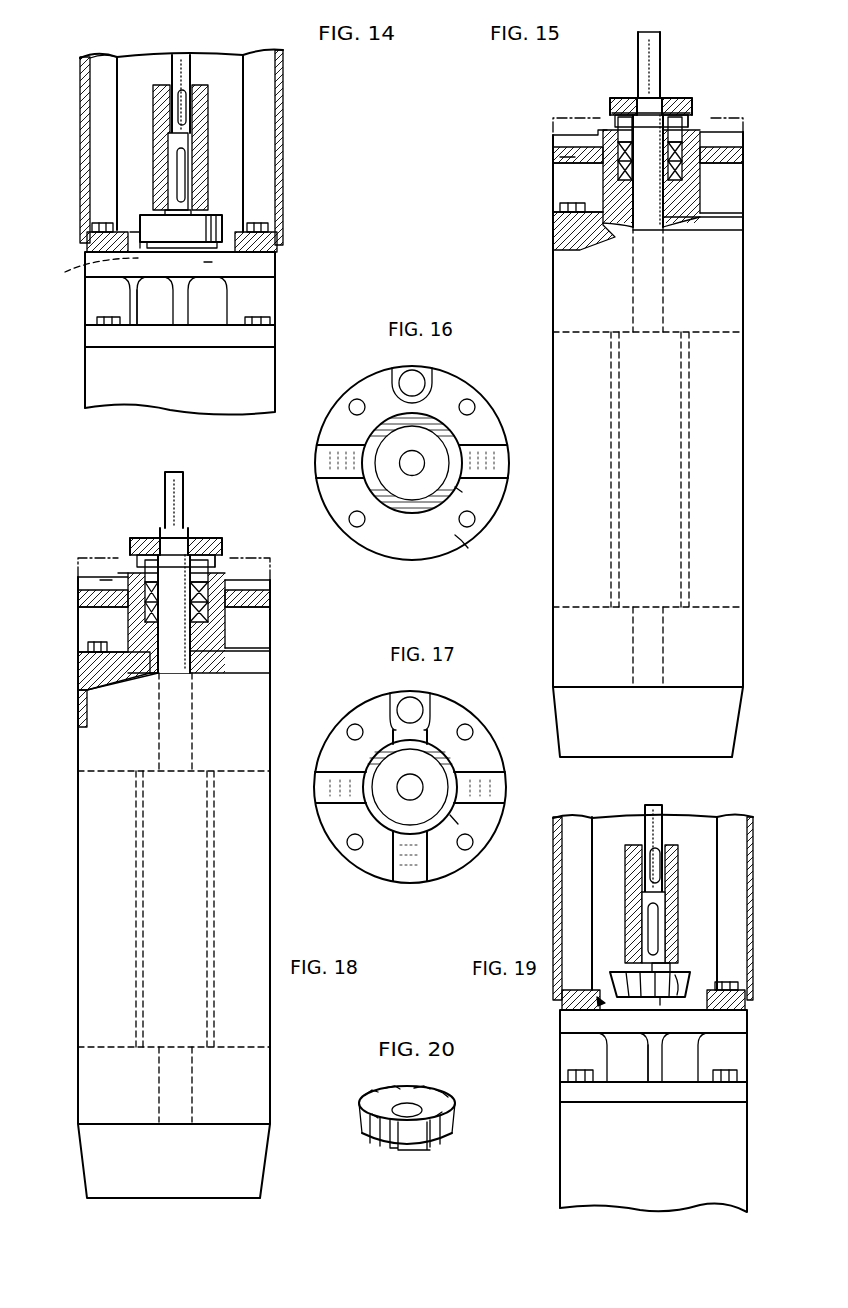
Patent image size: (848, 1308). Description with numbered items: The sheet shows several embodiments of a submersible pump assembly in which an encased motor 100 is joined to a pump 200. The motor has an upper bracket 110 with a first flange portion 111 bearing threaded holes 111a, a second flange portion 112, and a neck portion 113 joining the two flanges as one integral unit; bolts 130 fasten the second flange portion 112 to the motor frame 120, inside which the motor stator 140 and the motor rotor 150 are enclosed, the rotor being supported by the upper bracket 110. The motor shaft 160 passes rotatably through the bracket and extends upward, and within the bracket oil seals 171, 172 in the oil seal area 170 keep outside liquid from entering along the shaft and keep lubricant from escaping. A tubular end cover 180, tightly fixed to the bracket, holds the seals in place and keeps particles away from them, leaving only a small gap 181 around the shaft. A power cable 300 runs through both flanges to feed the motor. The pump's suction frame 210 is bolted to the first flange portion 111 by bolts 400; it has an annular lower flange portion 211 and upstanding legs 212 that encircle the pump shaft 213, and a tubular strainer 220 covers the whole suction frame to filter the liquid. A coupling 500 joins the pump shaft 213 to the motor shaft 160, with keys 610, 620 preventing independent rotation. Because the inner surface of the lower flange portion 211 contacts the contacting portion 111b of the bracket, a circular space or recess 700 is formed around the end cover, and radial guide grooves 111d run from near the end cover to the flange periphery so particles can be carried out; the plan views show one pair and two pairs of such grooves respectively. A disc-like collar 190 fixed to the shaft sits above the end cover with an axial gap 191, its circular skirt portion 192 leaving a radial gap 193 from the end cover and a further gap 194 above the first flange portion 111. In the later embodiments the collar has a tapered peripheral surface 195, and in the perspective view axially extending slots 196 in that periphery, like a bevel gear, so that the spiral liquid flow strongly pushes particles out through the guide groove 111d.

In FIG. 14, the encased motor 100 is at (92, 410).
In FIG. 15, the encased motor 100 is at (748, 455).
In FIG. 18, the encased motor 100 is at (92, 1056).
In FIG. 19, the encased motor 100 is at (752, 1181).
In FIG. 14, the upper bracket 110 is at (270, 260).
In FIG. 16, the upper bracket 110 is at (437, 547).
In FIG. 18, the upper bracket 110 is at (253, 577).
In FIG. 14, the first flange portion 111 is at (265, 283).
In FIG. 15, the first flange portion 111 is at (565, 177).
In FIG. 16, the first flange portion 111 is at (463, 543).
In FIG. 18, the first flange portion 111 is at (117, 578).
In FIG. 19, the first flange portion 111 is at (735, 1023).
In FIG. 16, the threaded holes 111a is at (468, 405).
In FIG. 17, the threaded holes 111a is at (463, 727).
In FIG. 14, the contacting portion 111b is at (208, 253).
In FIG. 15, the contacting portion 111b is at (560, 132).
In FIG. 16, the contacting portion 111b is at (460, 490).
In FIG. 17, the contacting portion 111b is at (455, 822).
In FIG. 14, the radial guide groove 111d is at (91, 276).
In FIG. 15, the radial guide groove 111d is at (565, 157).
In FIG. 16, the radial guide groove 111d is at (330, 463).
In FIG. 17, the radial guide groove 111d is at (405, 738).
In FIG. 18, the radial guide groove 111d is at (108, 583).
In FIG. 19, the radial guide groove 111d is at (605, 1020).
In FIG. 14, the second flange portion 112 is at (258, 340).
In FIG. 15, the second flange portion 112 is at (557, 220).
In FIG. 18, the second flange portion 112 is at (258, 662).
In FIG. 19, the second flange portion 112 is at (570, 1092).
In FIG. 14, the neck portion 113 is at (157, 303).
In FIG. 19, the neck portion 113 is at (633, 1058).
In FIG. 14, the motor frame 120 is at (83, 383).
In FIG. 15, the motor frame 120 is at (728, 270).
In FIG. 18, the motor frame 120 is at (258, 717).
In FIG. 19, the motor frame 120 is at (653, 1157).
In FIG. 14, the bolts 130 is at (100, 320).
In FIG. 18, the bolts 130 is at (95, 645).
In FIG. 19, the bolts 130 is at (652, 1076).
In FIG. 15, the motor stator 140 is at (726, 506).
In FIG. 18, the motor stator 140 is at (110, 942).
In FIG. 15, the motor rotor 150 is at (664, 592).
In FIG. 18, the motor rotor 150 is at (169, 977).
In FIG. 14, the motor shaft 160 is at (175, 140).
In FIG. 15, the motor shaft 160 is at (643, 30).
In FIG. 16, the motor shaft 160 is at (418, 461).
In FIG. 17, the motor shaft 160 is at (417, 783).
In FIG. 18, the motor shaft 160 is at (173, 470).
In FIG. 19, the motor shaft 160 is at (643, 895).
In FIG. 15, the oil seal area 170 is at (681, 133).
In FIG. 18, the oil seal area 170 is at (199, 577).
In FIG. 15, the oil seal 171 is at (745, 155).
In FIG. 18, the oil seal 171 is at (271, 593).
In FIG. 15, the oil seal 172 is at (685, 172).
In FIG. 18, the oil seal 172 is at (227, 612).
In FIG. 15, the tubular end cover 180 is at (676, 113).
In FIG. 18, the tubular end cover 180 is at (148, 537).
In FIG. 15, the small gap 181 is at (614, 97).
In FIG. 18, the small gap 181 is at (193, 537).
In FIG. 14, the disc-like collar 190 is at (213, 215).
In FIG. 15, the disc-like collar 190 is at (612, 97).
In FIG. 16, the disc-like collar 190 is at (398, 485).
In FIG. 17, the disc-like collar 190 is at (385, 775).
In FIG. 18, the disc-like collar 190 is at (133, 537).
In FIG. 19, the disc-like collar 190 is at (682, 980).
In FIG. 20, the disc-like collar 190 is at (366, 1097).
In FIG. 15, the axial gap 191 is at (612, 111).
In FIG. 15, the circular skirt portion 192 is at (698, 117).
In FIG. 15, the radial gap 193 is at (613, 121).
In FIG. 15, the further gap 194 is at (744, 133).
In FIG. 18, the tapered peripheral surface 195 is at (216, 566).
In FIG. 20, the tapered peripheral surface 195 is at (440, 1140).
In FIG. 19, the axially extending slots 196 is at (678, 972).
In FIG. 20, the axially extending slots 196 is at (428, 1150).
In FIG. 14, the pump 200 is at (281, 50).
In FIG. 19, the pump 200 is at (653, 817).
In FIG. 14, the suction frame 210 is at (265, 85).
In FIG. 14, the annular lower flange portion 211 is at (95, 240).
In FIG. 15, the annular lower flange portion 211 is at (552, 120).
In FIG. 18, the annular lower flange portion 211 is at (174, 569).
In FIG. 19, the annular lower flange portion 211 is at (745, 1000).
In FIG. 14, the legs 212 is at (106, 63).
In FIG. 19, the legs 212 is at (732, 830).
In FIG. 14, the pump shaft 213 is at (183, 60).
In FIG. 19, the pump shaft 213 is at (654, 805).
In FIG. 14, the tubular strainer 220 is at (283, 146).
In FIG. 16, the power cable 300 is at (404, 371).
In FIG. 17, the power cable 300 is at (416, 702).
In FIG. 14, the bolts 400 is at (100, 212).
In FIG. 19, the bolts 400 is at (730, 982).
In FIG. 14, the coupling 500 is at (212, 145).
In FIG. 19, the coupling 500 is at (680, 870).
In FIG. 14, the key 610 is at (180, 100).
In FIG. 19, the key 610 is at (650, 860).
In FIG. 14, the key 620 is at (180, 165).
In FIG. 19, the key 620 is at (653, 932).
In FIG. 14, the space or recess 700 is at (137, 233).
In FIG. 19, the space or recess 700 is at (601, 1000).